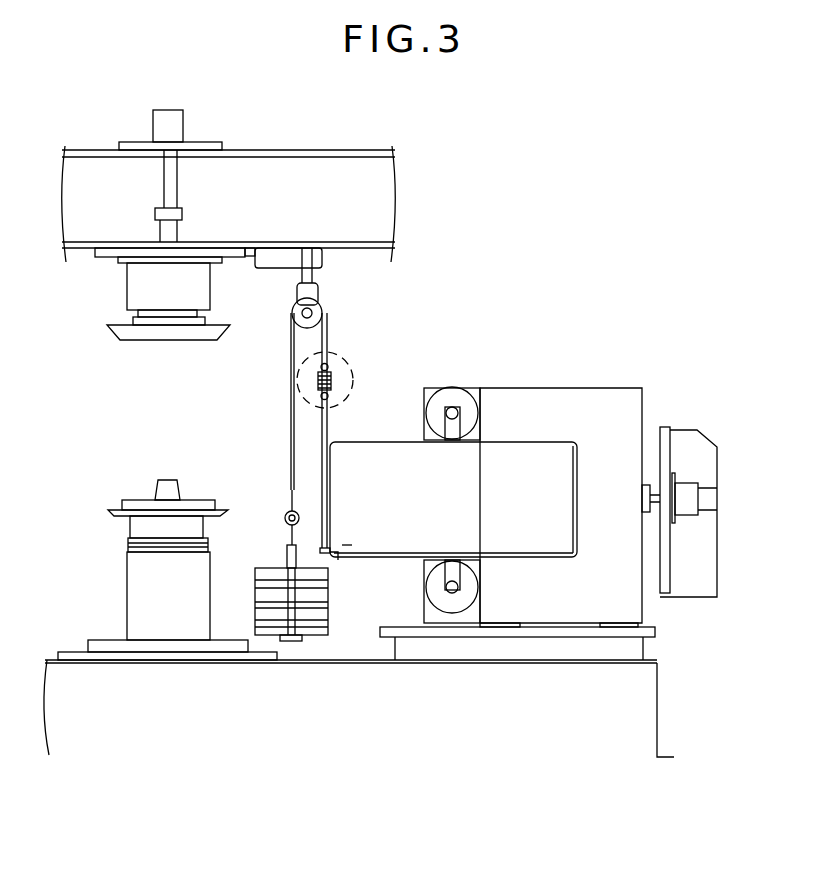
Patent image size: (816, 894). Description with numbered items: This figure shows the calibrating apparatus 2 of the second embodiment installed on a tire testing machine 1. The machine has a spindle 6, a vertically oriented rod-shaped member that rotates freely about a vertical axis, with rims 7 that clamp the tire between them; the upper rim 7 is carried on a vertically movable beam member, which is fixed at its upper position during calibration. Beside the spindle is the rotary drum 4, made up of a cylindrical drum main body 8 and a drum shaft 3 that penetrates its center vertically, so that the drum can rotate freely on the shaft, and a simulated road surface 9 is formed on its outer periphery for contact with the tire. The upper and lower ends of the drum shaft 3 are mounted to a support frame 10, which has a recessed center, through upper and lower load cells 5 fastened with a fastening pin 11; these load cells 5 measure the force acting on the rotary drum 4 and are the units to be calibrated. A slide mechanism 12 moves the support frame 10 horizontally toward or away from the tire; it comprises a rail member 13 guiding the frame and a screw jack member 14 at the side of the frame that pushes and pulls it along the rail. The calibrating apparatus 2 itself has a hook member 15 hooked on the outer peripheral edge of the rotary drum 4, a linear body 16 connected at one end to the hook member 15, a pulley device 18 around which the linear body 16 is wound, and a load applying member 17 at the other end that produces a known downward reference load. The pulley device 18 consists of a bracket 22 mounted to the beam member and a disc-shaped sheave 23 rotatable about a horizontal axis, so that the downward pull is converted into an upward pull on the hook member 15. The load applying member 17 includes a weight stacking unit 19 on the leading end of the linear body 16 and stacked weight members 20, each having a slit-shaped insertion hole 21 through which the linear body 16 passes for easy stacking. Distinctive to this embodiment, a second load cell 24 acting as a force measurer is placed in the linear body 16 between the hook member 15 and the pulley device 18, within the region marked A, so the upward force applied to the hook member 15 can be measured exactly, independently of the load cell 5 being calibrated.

The tire testing machine 1 is at (548, 282).
The calibrating apparatus 2 is at (248, 452).
The drum shaft 3 is at (453, 500).
The rotary drum 4 is at (436, 482).
The load cell 5 is at (480, 430).
The spindle 6 is at (127, 580).
The rim 7 is at (110, 336).
The drum main body 8 is at (371, 443).
The simulated road surface 9 is at (576, 462).
The support frame 10 is at (643, 412).
The fastening pin 11 is at (426, 580).
The slide mechanism 12 is at (703, 551).
The rail member 13 is at (655, 632).
The screw jack member 14 is at (685, 522).
The hook member 15 is at (327, 553).
The linear body 16 is at (290, 360).
The load applying member 17 is at (308, 662).
The pulley device 18 is at (359, 292).
The weight stacking unit 19 is at (293, 645).
The weight member 20 is at (330, 632).
The insertion hole 21 is at (275, 566).
The bracket 22 is at (318, 298).
The sheave 23 is at (312, 325).
The second load cell 24 is at (318, 380).
The detail region A is at (300, 408).